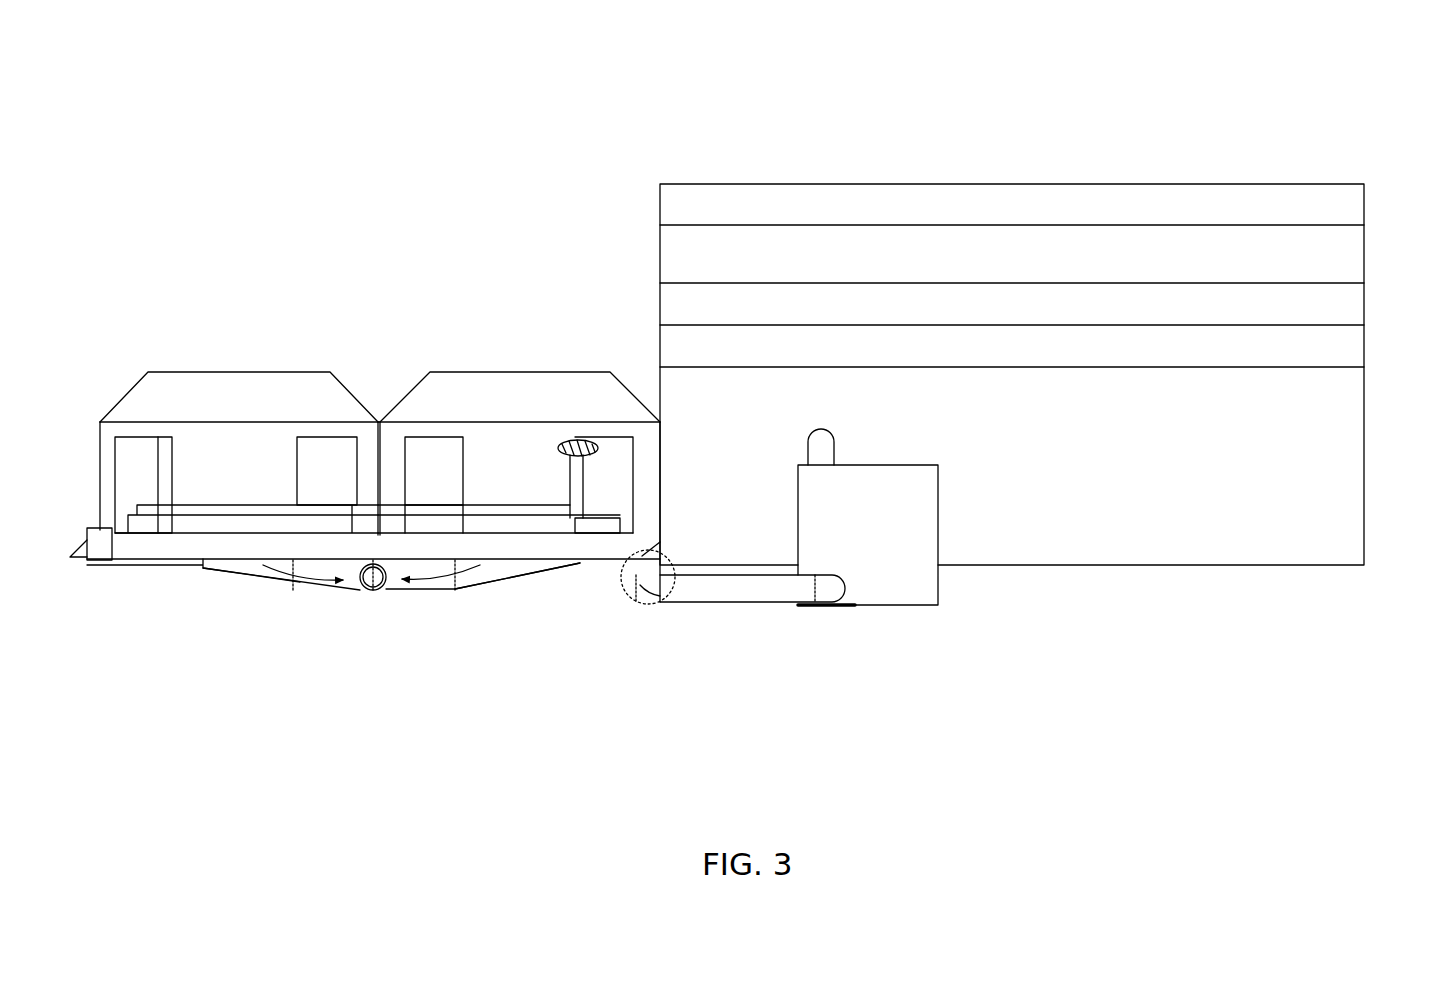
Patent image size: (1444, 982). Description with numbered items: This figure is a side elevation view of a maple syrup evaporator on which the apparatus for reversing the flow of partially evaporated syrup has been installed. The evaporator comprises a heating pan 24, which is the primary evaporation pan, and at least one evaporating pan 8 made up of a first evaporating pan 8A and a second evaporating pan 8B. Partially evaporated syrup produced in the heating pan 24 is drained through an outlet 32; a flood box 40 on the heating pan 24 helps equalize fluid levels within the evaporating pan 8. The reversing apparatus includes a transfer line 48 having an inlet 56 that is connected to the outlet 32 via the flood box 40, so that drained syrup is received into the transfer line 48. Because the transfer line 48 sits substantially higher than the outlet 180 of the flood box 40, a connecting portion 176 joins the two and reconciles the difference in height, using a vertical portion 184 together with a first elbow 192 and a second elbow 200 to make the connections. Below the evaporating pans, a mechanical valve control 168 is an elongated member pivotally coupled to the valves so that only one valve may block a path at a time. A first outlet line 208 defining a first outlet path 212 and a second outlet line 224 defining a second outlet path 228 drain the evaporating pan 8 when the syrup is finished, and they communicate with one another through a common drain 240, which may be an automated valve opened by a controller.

The evaporating pan 8 is at (289, 79).
The first evaporating pan 8A is at (515, 387).
The second evaporating pan 8B is at (233, 387).
The heating pan 24 is at (1353, 418).
The outlet 32 is at (837, 447).
The flood box 40 is at (942, 593).
The transfer line 48 is at (538, 552).
The inlet 56 is at (633, 553).
The mechanical valve control 168 is at (167, 510).
The connecting portion 176 is at (737, 592).
The outlet of the flood box 180 is at (850, 605).
The vertical portion 184 is at (647, 578).
The first elbow 192 is at (647, 583).
The second elbow 200 is at (648, 552).
The first outlet line 208 is at (512, 567).
The first outlet path 212 is at (472, 565).
The second outlet line 224 is at (233, 578).
The second outlet path 228 is at (308, 585).
The common drain 240 is at (378, 592).